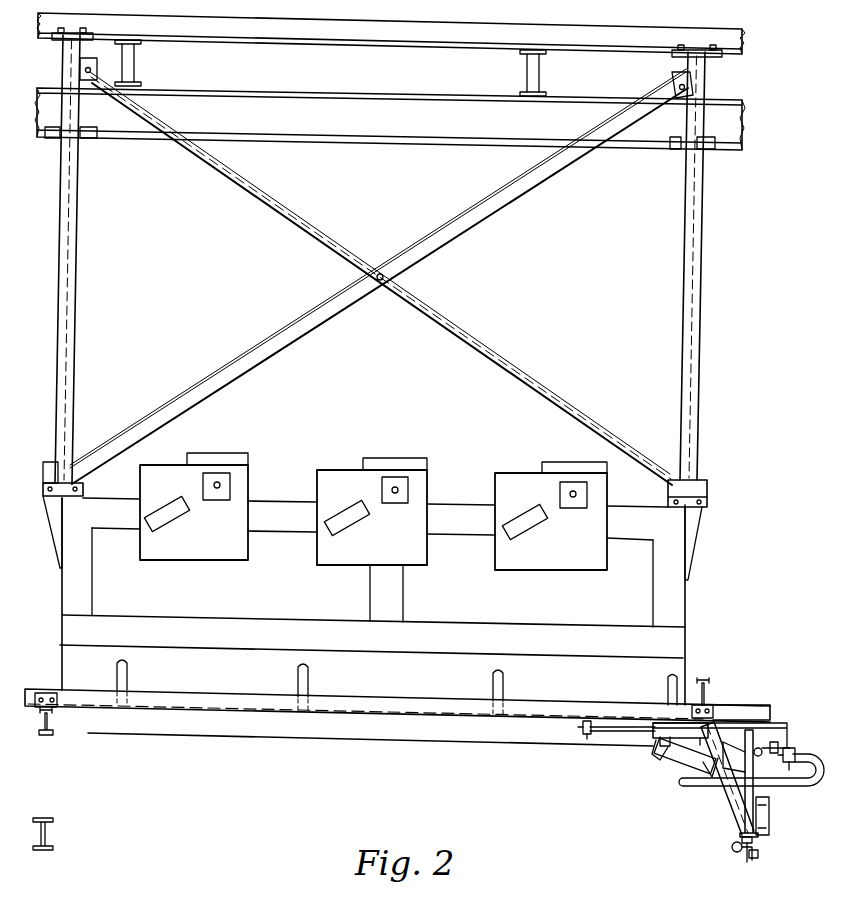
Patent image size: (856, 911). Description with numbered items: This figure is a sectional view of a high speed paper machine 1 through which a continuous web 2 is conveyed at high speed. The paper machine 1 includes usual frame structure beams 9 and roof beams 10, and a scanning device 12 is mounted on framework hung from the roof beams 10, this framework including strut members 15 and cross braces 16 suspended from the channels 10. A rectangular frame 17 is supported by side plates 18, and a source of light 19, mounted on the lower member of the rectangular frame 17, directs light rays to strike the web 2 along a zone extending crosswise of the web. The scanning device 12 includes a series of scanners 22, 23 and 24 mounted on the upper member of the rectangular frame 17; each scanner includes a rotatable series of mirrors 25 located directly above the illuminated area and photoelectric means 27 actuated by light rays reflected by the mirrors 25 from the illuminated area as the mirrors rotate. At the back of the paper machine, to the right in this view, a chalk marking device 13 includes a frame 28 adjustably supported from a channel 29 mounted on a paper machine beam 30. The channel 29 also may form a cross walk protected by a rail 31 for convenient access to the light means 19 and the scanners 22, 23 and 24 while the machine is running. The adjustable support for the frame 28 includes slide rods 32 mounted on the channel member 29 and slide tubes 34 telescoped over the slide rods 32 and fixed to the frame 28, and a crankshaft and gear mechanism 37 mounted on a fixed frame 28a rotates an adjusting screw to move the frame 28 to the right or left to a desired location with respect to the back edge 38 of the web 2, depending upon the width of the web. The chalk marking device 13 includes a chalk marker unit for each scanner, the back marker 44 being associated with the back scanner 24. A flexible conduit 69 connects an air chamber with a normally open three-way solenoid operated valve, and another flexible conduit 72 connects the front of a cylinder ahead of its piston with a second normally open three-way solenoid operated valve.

The paper machine 1 is at (745, 685).
The continuous web 2 is at (481, 746).
The frame structure beam 9 is at (40, 848).
The roof beam 10 is at (134, 66).
The scanning device 12 is at (721, 537).
The chalk marking device 13 is at (700, 796).
The strut member 15 is at (78, 328).
The cross brace 16 is at (288, 342).
The rectangular frame 17 is at (428, 627).
The side plate 18 is at (55, 520).
The source of light 19 is at (75, 660).
The front scanner 22 is at (248, 481).
The center scanner 23 is at (427, 477).
The back scanner 24 is at (607, 490).
The rotatable series of mirrors 25 is at (219, 500).
The photoelectric means 27 is at (170, 518).
The frame 28 is at (724, 718).
The fixed frame 28a is at (747, 800).
The channel 29 is at (762, 705).
The paper machine beam 30 is at (46, 722).
The rail 31 is at (128, 670).
The slide rod 32 is at (617, 733).
The slide tube 34 is at (660, 722).
The crankshaft and gear mechanism 37 is at (746, 860).
The back edge 38 is at (660, 752).
The back marker 44 is at (743, 761).
The flexible conduit 69 is at (800, 786).
The flexible conduit 72 is at (793, 752).